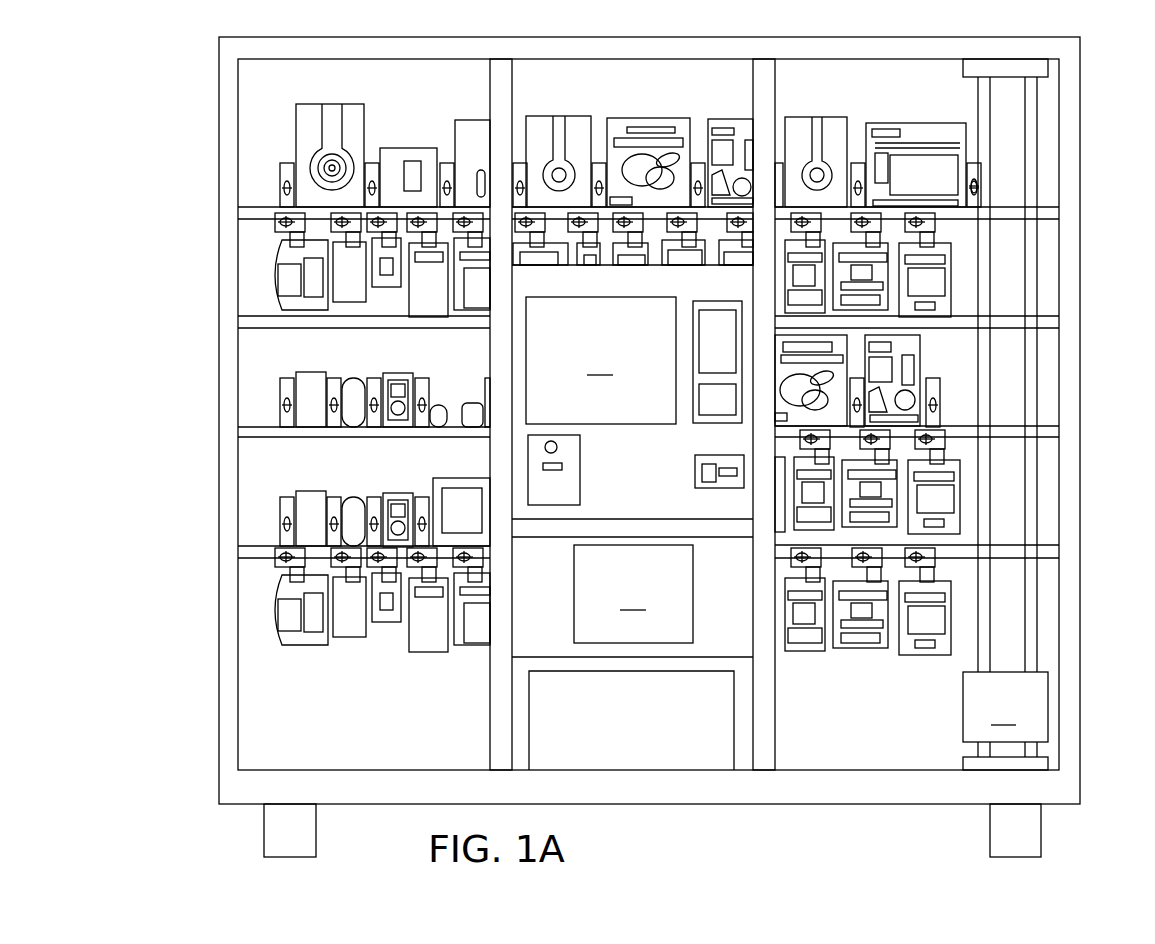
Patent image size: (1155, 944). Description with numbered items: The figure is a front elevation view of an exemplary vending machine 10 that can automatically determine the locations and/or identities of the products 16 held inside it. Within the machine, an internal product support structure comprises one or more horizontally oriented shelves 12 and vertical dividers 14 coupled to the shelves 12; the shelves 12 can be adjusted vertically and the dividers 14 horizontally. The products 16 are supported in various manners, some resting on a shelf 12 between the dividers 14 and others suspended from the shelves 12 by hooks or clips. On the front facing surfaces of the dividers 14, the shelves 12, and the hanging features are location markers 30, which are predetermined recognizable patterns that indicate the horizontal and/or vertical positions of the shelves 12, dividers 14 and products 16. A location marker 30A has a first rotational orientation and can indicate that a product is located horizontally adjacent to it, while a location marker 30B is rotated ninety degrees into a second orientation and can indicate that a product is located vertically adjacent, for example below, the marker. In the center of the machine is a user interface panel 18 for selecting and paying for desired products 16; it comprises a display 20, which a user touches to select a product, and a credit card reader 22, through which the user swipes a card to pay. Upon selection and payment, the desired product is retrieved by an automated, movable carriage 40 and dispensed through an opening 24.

The vending machine 10 is at (206, 101).
The shelves 12 is at (254, 211).
The dividers 14 is at (373, 163).
The products 16 is at (306, 135).
The user interface panel 18 is at (632, 425).
The display 20 is at (601, 360).
The credit card reader 22 is at (720, 482).
The opening 24 is at (633, 594).
The location markers 30 is at (923, 223).
The location marker 30A is at (934, 400).
The location marker 30B is at (945, 437).
The movable carriage 40 is at (1005, 414).